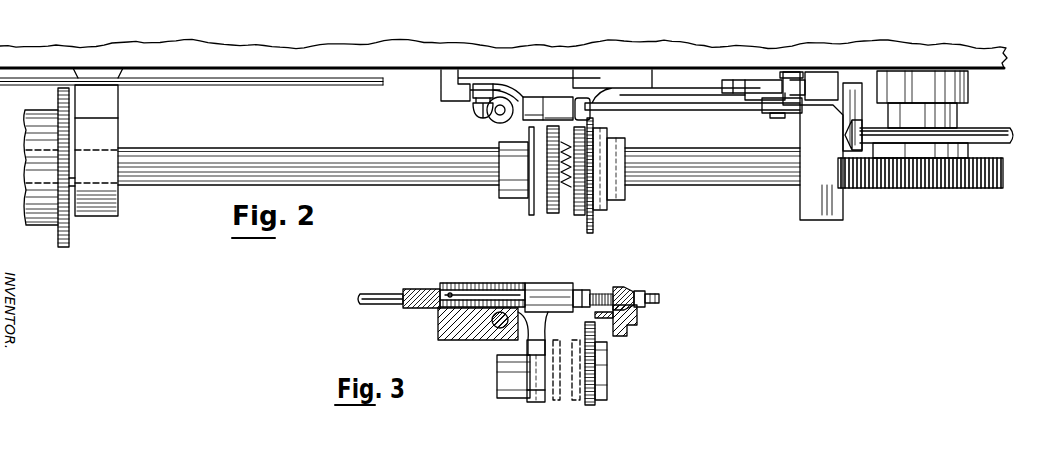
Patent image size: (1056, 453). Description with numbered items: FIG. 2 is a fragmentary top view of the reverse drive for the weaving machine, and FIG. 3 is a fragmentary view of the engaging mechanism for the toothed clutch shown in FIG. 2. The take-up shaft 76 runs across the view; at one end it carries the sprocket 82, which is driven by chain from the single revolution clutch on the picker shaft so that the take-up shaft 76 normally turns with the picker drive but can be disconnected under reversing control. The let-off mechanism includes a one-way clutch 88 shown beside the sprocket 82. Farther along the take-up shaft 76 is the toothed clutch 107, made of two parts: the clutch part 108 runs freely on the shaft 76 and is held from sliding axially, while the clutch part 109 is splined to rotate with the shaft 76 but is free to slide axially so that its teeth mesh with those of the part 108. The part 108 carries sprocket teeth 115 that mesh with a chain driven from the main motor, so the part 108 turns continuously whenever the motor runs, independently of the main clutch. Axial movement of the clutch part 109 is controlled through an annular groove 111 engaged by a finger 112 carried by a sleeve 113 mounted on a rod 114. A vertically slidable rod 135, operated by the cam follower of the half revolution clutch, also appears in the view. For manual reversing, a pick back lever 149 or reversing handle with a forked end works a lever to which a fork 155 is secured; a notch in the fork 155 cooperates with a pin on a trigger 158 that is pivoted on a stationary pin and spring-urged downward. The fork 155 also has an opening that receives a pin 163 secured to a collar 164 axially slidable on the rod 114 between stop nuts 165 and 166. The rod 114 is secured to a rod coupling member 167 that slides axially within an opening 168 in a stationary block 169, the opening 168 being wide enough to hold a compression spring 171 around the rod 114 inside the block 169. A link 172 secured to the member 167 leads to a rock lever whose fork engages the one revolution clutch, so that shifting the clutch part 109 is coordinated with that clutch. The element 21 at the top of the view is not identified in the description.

In FIG. 2, the board 21 is at (734, 50).
In FIG. 2, the take-up shaft 76 is at (738, 137).
In FIG. 2, the sprocket 82 is at (69, 236).
In FIG. 2, the one-way clutch 88 is at (30, 228).
In FIG. 2, the toothed clutch 107 is at (508, 207).
In FIG. 3, the toothed clutch 107 is at (486, 401).
In FIG. 2, the clutch part 108 is at (582, 215).
In FIG. 3, the clutch part 108 is at (580, 398).
In FIG. 2, the clutch part 109 is at (552, 214).
In FIG. 3, the clutch part 109 is at (556, 400).
In FIG. 2, the annular groove 111 is at (528, 134).
In FIG. 3, the annular groove 111 is at (537, 380).
In FIG. 3, the finger 112 is at (535, 370).
In FIG. 3, the sleeve 113 is at (553, 292).
In FIG. 3, the rod 114 is at (530, 284).
In FIG. 2, the sprocket teeth 115 is at (594, 220).
In FIG. 3, the sprocket teeth 115 is at (597, 374).
In FIG. 2, the vertically slidable rod 135 is at (494, 120).
In FIG. 3, the vertically slidable rod 135 is at (504, 330).
In FIG. 2, the pick back lever 149 is at (978, 129).
In FIG. 3, the fork 155 is at (615, 315).
In FIG. 2, the trigger 158 is at (478, 105).
In FIG. 3, the pin 163 is at (633, 334).
In FIG. 3, the collar 164 is at (641, 289).
In FIG. 3, the stop nut 165 is at (659, 295).
In FIG. 3, the stop nut 166 is at (612, 273).
In FIG. 3, the rod coupling member 167 is at (444, 266).
In FIG. 3, the opening 168 is at (432, 310).
In FIG. 3, the stationary block 169 is at (452, 338).
In FIG. 3, the compression spring 171 is at (490, 290).
In FIG. 3, the link 172 is at (398, 270).